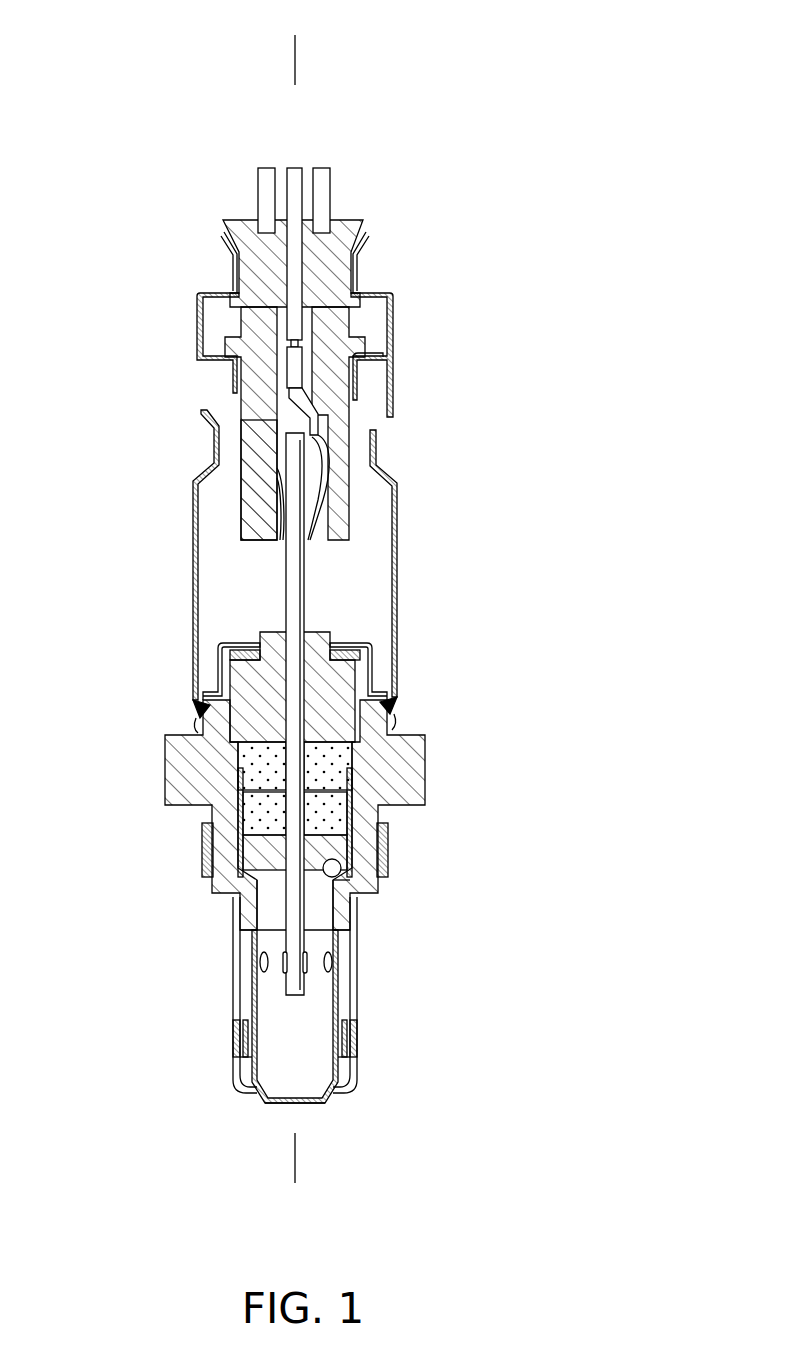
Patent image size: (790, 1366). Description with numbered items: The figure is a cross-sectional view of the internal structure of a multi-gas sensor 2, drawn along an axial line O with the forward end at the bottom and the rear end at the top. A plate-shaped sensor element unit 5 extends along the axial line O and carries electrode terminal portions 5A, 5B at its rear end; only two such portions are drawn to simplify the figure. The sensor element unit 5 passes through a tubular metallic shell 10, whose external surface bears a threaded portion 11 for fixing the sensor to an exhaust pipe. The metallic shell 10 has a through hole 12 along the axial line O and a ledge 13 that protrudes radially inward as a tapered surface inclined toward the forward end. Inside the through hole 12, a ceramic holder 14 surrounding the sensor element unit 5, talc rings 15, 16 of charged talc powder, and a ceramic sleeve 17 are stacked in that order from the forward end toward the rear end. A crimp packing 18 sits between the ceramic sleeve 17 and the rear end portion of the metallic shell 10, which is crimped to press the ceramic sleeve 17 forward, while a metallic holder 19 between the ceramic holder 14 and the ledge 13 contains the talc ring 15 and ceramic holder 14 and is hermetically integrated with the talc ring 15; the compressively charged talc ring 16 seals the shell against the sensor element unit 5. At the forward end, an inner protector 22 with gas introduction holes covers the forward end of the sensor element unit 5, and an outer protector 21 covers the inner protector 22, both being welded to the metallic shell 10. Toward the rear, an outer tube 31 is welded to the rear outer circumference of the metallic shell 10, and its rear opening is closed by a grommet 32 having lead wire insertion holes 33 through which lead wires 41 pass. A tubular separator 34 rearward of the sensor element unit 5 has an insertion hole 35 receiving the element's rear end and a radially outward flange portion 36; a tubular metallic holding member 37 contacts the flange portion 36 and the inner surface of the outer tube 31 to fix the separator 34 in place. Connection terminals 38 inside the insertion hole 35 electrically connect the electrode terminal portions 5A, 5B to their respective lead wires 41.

The axial line O is at (294, 610).
The multi-gas sensor 2 is at (384, 202).
The sensor element unit 5 is at (302, 777).
The electrode terminal portion 5A is at (305, 544).
The electrode terminal portion 5B is at (285, 544).
The metallic shell 10 is at (167, 768).
The threaded portion 11 is at (202, 847).
The through hole 12 is at (272, 920).
The ledge 13 is at (340, 885).
The ceramic holder 14 is at (350, 852).
The talc ring 15 is at (352, 813).
The talc ring 16 is at (356, 755).
The ceramic sleeve 17 is at (357, 700).
The crimp packing 18 is at (370, 658).
The metallic holder 19 is at (340, 873).
The outer protector 21 is at (358, 997).
The inner protector 22 is at (323, 1100).
The outer tube 31 is at (377, 453).
The grommet 32 is at (347, 267).
The lead wire insertion hole 33 is at (293, 282).
The separator 34 is at (240, 443).
The insertion hole 35 is at (280, 408).
The flange portion 36 is at (227, 340).
The holding member 37 is at (370, 352).
The connection terminal 38 is at (340, 425).
The lead wire 41 is at (258, 187).